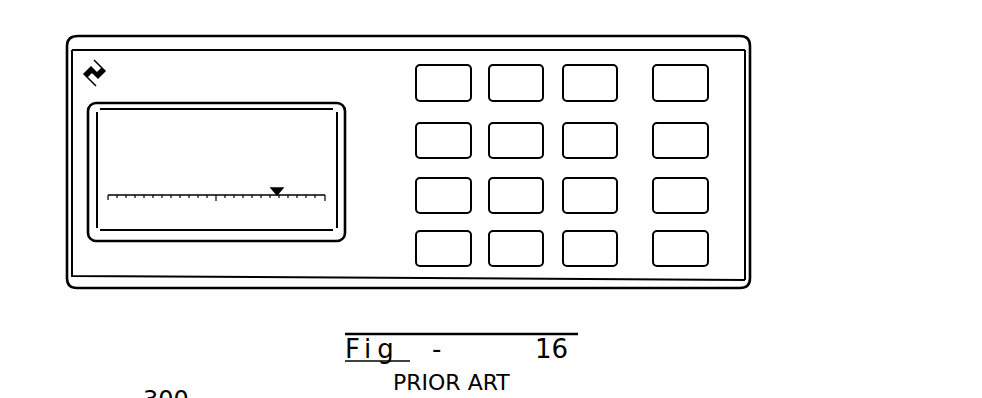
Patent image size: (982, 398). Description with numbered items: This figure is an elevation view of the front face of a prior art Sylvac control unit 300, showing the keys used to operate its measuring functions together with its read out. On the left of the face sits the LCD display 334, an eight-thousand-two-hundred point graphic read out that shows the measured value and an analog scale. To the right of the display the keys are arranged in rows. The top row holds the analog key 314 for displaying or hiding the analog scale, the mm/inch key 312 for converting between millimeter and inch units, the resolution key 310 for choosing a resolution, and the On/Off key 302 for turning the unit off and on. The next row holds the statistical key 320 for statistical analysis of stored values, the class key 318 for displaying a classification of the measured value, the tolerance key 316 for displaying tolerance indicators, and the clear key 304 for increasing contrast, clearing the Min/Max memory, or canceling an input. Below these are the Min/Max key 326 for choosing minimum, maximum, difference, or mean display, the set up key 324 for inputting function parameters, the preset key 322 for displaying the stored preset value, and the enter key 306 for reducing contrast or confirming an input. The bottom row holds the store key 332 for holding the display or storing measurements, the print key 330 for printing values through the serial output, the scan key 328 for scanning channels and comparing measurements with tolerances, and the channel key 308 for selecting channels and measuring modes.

The control unit 300 is at (100, 292).
The On/Off key 302 is at (708, 88).
The clear key 304 is at (708, 143).
The enter key 306 is at (708, 197).
The channel key 308 is at (708, 250).
The resolution key 310 is at (587, 64).
The mm/inch key 312 is at (512, 64).
The analog key 314 is at (442, 64).
The tolerance key 316 is at (617, 138).
The class key 318 is at (518, 123).
The statistical key 320 is at (416, 128).
The preset key 322 is at (617, 195).
The set up key 324 is at (520, 178).
The Min/Max key 326 is at (416, 190).
The scan key 328 is at (588, 268).
The print key 330 is at (525, 268).
The store key 332 is at (463, 268).
The LCD display 334 is at (200, 102).